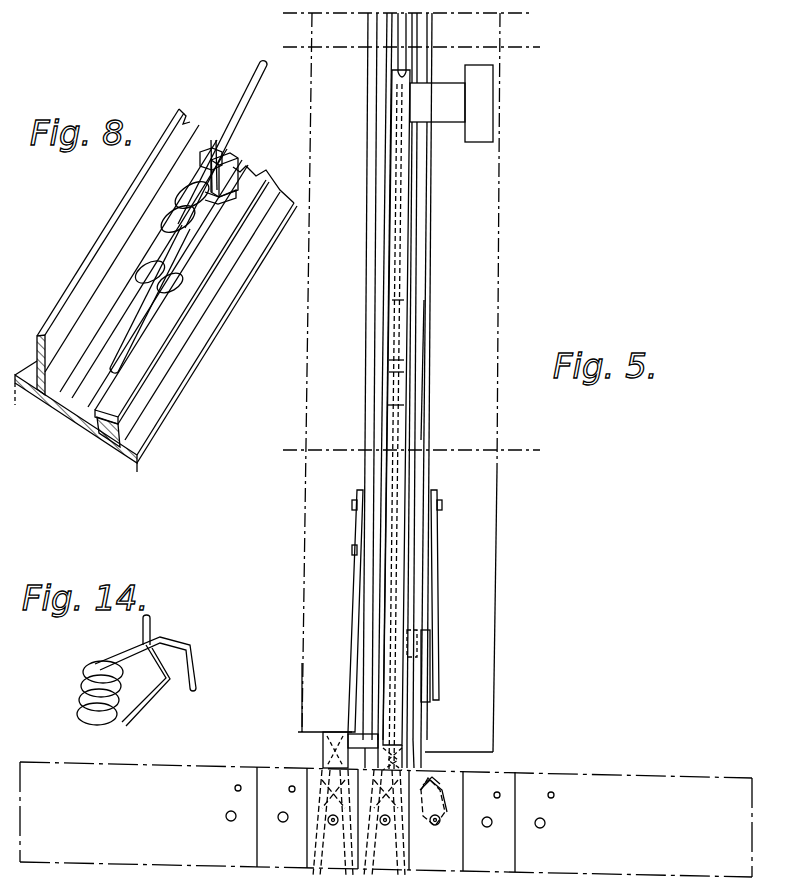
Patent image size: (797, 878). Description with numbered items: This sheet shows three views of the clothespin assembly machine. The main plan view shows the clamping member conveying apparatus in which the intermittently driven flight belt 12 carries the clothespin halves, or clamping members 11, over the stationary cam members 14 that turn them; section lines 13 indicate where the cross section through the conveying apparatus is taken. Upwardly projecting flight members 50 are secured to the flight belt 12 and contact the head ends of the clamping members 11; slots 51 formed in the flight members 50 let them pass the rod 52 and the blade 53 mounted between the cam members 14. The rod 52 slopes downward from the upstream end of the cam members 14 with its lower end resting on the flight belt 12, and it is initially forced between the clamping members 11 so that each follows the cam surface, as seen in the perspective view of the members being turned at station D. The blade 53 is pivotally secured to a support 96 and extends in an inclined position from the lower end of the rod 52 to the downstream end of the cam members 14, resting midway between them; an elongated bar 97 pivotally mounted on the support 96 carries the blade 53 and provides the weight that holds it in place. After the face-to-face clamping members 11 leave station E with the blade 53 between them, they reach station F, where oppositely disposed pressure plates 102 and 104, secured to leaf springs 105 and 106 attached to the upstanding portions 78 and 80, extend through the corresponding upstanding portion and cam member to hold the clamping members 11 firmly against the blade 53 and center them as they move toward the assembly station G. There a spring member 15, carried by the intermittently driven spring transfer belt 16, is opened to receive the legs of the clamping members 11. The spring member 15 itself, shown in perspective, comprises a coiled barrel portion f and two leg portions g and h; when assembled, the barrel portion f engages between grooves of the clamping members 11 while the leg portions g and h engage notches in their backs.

In FIG. 8, the clamping members 11 is at (100, 330).
In FIG. 5, the flight belt 12 is at (300, 32).
In FIG. 8, the flight belt 12 is at (93, 430).
In FIG. 5, the section line 13- 13 is at (300, 436).
In FIG. 5, the cam members 14 is at (377, 325).
In FIG. 8, the cam members 14 is at (157, 373).
In FIG. 14, the spring member 15 is at (136, 660).
In FIG. 5, the spring transfer belt 16 is at (588, 770).
In FIG. 8, the flight members 50 is at (237, 170).
In FIG. 8, the slots 51 is at (213, 138).
In FIG. 5, the rod 52 is at (400, 34).
In FIG. 8, the rod 52 is at (244, 100).
In FIG. 5, the blade 53 is at (404, 306).
In FIG. 5, the upstanding portion 78 is at (366, 425).
In FIG. 8, the upstanding portion 78 is at (70, 285).
In FIG. 5, the upstanding portion 80 is at (427, 406).
In FIG. 5, the support 96 is at (450, 106).
In FIG. 5, the elongated bar 97 is at (400, 381).
In FIG. 5, the pressure plate 102 is at (358, 706).
In FIG. 5, the pressure plate 104 is at (426, 668).
In FIG. 5, the leaf spring 105 is at (360, 588).
In FIG. 5, the leaf spring 106 is at (437, 578).
In FIG. 5, the station D is at (432, 136).
In FIG. 8, the station D is at (76, 220).
In FIG. 5, the station E is at (406, 452).
In FIG. 5, the station F is at (408, 631).
In FIG. 5, the assembly station G is at (388, 770).
In FIG. 14, the barrel portion f is at (78, 696).
In FIG. 14, the leg portion g is at (198, 672).
In FIG. 14, the leg portion h is at (152, 640).